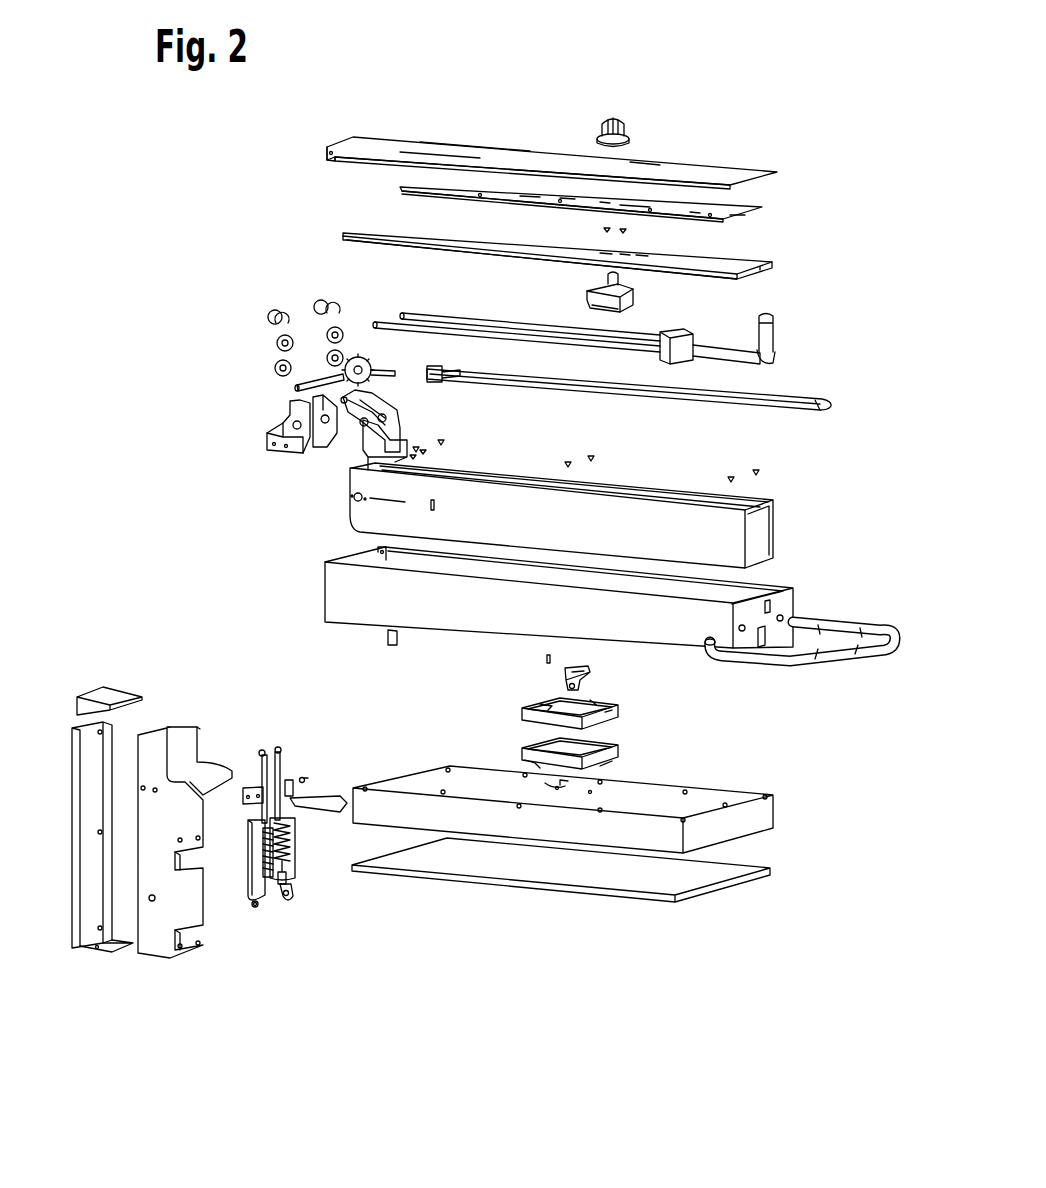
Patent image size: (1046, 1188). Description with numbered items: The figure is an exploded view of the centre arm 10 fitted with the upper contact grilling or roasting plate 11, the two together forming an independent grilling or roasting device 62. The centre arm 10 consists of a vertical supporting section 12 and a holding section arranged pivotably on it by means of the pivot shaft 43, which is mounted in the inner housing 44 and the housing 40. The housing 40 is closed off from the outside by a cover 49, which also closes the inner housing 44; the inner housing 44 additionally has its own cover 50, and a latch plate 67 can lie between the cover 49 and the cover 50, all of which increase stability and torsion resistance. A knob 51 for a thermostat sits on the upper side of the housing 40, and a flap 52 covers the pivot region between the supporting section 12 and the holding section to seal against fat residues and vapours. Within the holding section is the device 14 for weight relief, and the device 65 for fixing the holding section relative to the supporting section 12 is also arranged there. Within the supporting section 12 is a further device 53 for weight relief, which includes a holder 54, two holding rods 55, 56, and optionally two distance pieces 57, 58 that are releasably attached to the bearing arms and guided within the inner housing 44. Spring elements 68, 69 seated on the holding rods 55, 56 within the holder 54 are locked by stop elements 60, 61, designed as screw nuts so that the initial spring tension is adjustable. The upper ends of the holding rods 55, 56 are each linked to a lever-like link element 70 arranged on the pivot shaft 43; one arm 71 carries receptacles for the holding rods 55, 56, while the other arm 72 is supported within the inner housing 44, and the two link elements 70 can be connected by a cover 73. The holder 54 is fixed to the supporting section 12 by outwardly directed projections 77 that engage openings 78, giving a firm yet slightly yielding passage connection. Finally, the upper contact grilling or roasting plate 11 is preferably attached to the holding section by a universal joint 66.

The centre arm 10 is at (170, 377).
The upper contact grilling or roasting plate 11 is at (632, 873).
The vertical supporting section 12 is at (63, 828).
The device for weight relief 14 is at (818, 324).
The housing 40 is at (668, 630).
The pivot shaft 43 is at (322, 382).
The inner housing 44 is at (683, 540).
The cover 49 is at (512, 157).
The cover 50 is at (742, 263).
The knob 51 is at (613, 117).
The flap 52 is at (105, 688).
The further device for weight relief 53 is at (350, 890).
The holder 54 is at (253, 887).
The holding rod 55 is at (263, 768).
The holding rod 56 is at (282, 765).
The distance piece 57 is at (255, 795).
The distance piece 58 is at (290, 778).
The stop element 60 is at (270, 880).
The stop element 61 is at (281, 870).
The grilling or roasting device 62 is at (830, 95).
The device for fixing the holding section 65 is at (838, 385).
The universal joint 66 is at (560, 685).
The latch plate 67 is at (470, 190).
The spring element 68 is at (266, 855).
The spring element 69 is at (287, 832).
The link element 70 is at (415, 428).
The arm 71 is at (355, 413).
The arm 72 is at (362, 469).
The cover 73 is at (370, 401).
The projection 77 is at (257, 908).
The opening 78 is at (152, 900).